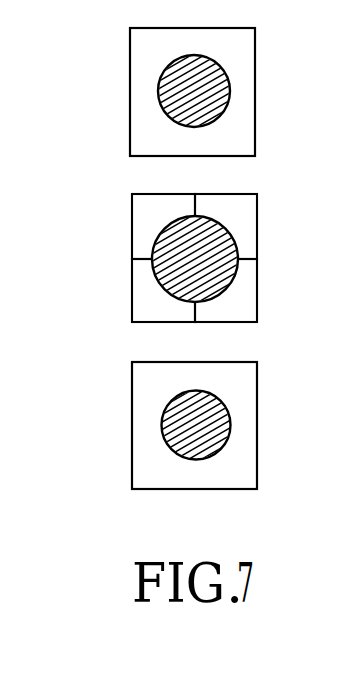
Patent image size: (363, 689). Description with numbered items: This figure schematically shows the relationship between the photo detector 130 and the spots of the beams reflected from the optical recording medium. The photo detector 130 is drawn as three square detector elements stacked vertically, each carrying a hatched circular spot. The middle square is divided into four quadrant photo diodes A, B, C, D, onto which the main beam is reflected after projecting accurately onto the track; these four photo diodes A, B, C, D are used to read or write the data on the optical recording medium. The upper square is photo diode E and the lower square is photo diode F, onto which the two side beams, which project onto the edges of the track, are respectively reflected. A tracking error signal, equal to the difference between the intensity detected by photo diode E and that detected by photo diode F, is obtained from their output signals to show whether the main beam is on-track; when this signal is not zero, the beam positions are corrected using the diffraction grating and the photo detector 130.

The photo detector 130 is at (345, 122).
The photo diode A is at (163, 226).
The photo diode B is at (226, 226).
The photo diode C is at (226, 290).
The photo diode D is at (163, 290).
The photo diode E is at (192, 91).
The photo diode F is at (194, 425).